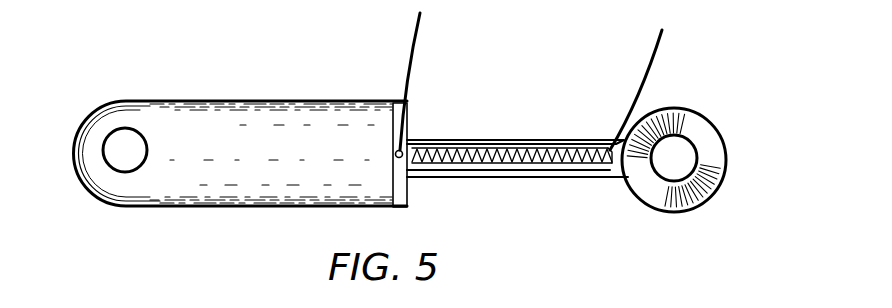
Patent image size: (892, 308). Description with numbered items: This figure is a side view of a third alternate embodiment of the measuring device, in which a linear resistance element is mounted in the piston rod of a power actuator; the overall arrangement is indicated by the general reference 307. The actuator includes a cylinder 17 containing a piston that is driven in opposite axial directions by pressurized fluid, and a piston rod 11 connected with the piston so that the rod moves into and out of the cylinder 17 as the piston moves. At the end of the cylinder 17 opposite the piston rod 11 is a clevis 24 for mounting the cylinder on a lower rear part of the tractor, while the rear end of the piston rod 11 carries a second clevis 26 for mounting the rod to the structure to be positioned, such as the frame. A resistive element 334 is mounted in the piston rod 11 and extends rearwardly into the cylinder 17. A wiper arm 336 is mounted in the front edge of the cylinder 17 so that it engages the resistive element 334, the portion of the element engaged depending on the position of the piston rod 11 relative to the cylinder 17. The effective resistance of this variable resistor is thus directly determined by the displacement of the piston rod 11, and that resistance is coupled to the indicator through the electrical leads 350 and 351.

The piston rod 11 is at (548, 178).
The cylinder 17 is at (310, 207).
The clevis 24 is at (115, 140).
The clevis 26 is at (680, 154).
The instrument assembly 307 is at (268, 64).
The resistive element 334 is at (542, 156).
The wiper arm 336 is at (408, 144).
The electrical lead 350 is at (655, 62).
The electrical lead 351 is at (410, 34).